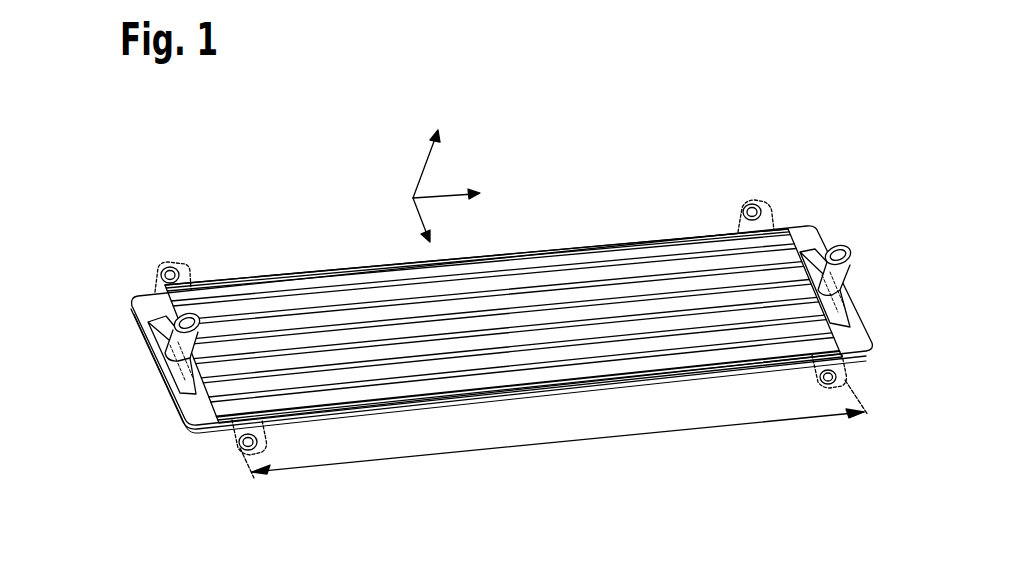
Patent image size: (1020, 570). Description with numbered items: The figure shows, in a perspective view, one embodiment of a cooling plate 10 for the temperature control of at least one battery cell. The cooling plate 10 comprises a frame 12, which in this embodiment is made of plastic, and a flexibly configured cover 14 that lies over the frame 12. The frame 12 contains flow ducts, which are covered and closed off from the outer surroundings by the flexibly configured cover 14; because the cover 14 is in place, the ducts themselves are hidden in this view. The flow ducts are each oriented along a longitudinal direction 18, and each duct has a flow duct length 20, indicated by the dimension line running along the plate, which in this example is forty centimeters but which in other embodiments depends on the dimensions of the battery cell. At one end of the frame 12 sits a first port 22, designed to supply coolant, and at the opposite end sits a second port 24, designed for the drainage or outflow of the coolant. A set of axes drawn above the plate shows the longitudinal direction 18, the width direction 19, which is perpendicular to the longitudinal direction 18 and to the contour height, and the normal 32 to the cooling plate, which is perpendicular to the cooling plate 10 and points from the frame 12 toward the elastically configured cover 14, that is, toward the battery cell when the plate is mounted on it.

The cooling plate 10 is at (728, 134).
The frame 12 is at (148, 300).
The flexibly configured cover 14 is at (596, 249).
The longitudinal direction 18 is at (445, 195).
The width direction 19 is at (415, 205).
The flow duct length 20 is at (560, 444).
The first port 22 is at (163, 328).
The second port 24 is at (847, 270).
The normal to the cooling plate 32 is at (425, 165).